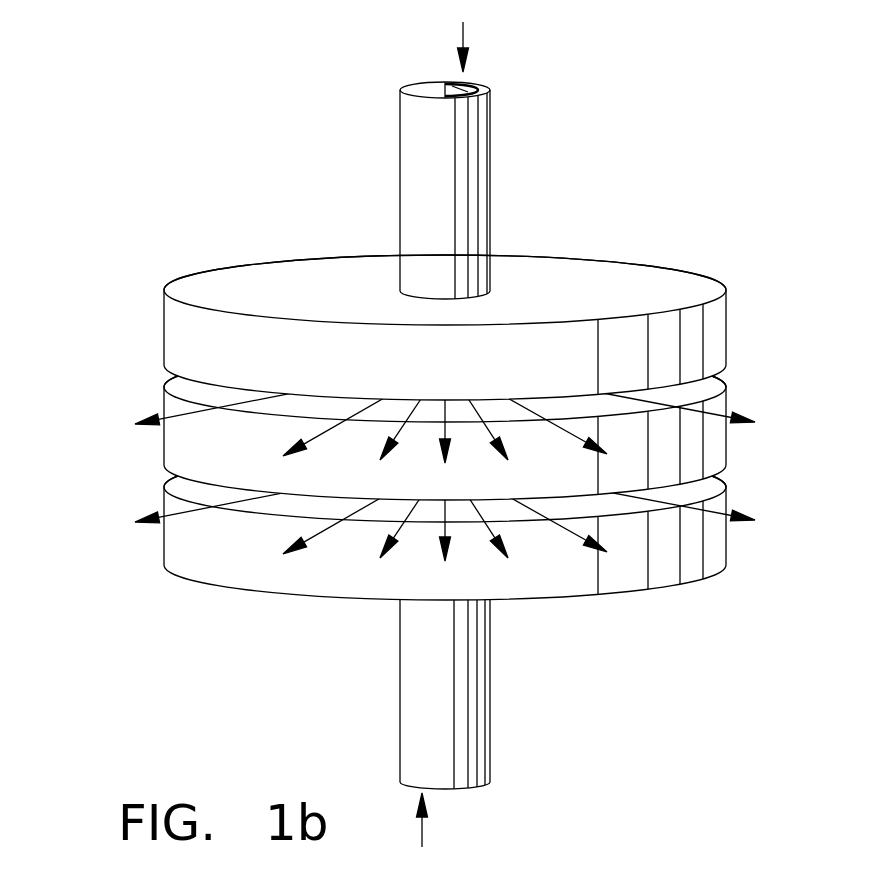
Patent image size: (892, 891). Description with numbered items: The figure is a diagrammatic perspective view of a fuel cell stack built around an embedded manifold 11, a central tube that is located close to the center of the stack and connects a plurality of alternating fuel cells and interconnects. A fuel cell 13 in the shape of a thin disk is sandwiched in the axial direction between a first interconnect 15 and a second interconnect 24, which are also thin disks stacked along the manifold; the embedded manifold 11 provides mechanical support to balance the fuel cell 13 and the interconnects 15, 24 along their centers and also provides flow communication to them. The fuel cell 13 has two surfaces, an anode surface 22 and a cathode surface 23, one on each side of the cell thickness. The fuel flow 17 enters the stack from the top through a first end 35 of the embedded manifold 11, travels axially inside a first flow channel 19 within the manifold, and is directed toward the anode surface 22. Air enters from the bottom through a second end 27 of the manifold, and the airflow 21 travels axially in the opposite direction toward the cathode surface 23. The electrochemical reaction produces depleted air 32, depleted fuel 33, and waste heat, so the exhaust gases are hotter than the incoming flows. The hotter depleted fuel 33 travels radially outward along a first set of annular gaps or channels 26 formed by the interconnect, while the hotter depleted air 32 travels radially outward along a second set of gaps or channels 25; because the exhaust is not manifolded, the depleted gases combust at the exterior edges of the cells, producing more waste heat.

The embedded manifold 11 is at (457, 203).
The fuel cell 13 is at (727, 442).
The first interconnect 15 is at (727, 540).
The fuel flow 17 is at (462, 36).
The first flow channel 19 is at (458, 88).
The airflow 21 is at (423, 832).
The anode surface 22 is at (163, 390).
The cathode surface 23 is at (163, 465).
The second interconnect 24 is at (727, 327).
The second set of gaps or channels 25 is at (700, 490).
The first set of annular gaps or channels 26 is at (705, 393).
The second end of the embedded manifold 27 is at (470, 787).
The depleted air 32 is at (710, 413).
The depleted fuel 33 is at (708, 510).
The first end of the embedded manifold 35 is at (418, 92).